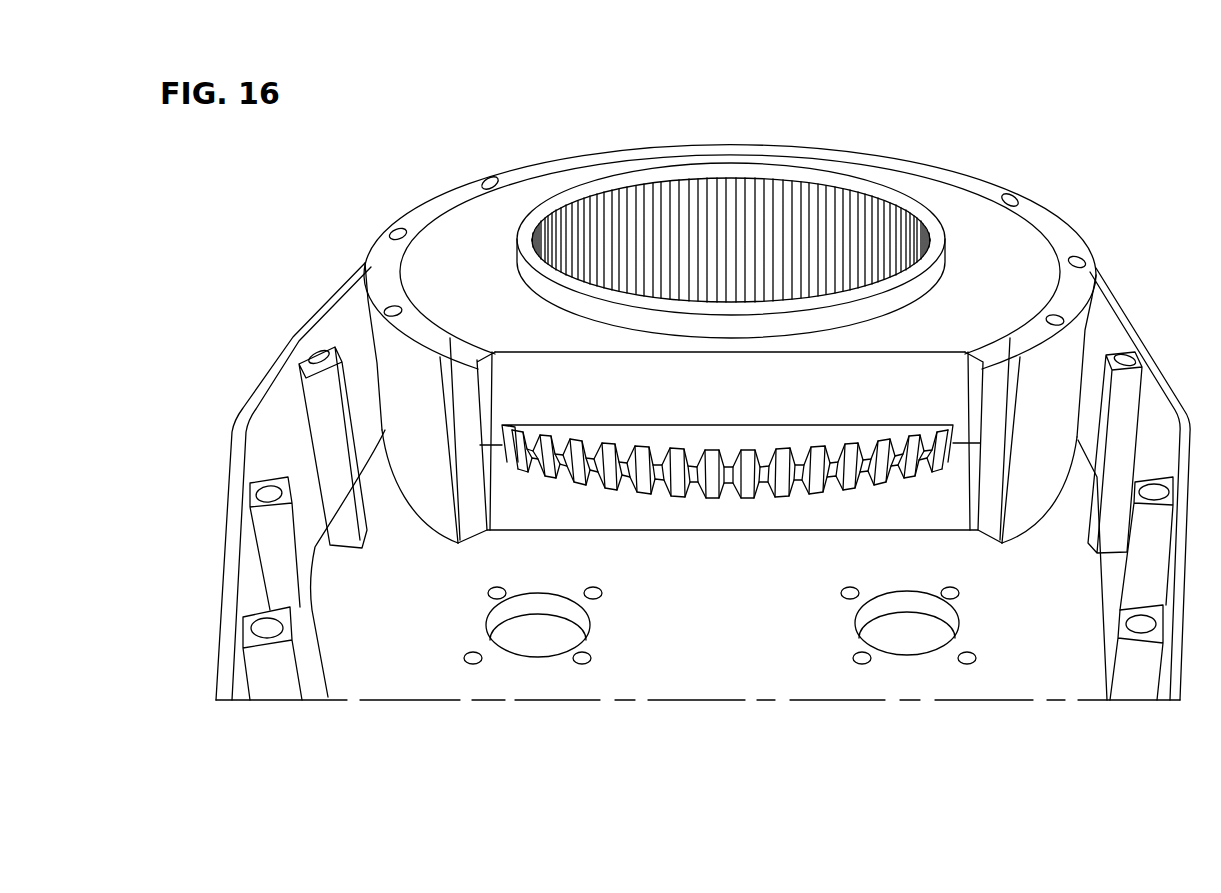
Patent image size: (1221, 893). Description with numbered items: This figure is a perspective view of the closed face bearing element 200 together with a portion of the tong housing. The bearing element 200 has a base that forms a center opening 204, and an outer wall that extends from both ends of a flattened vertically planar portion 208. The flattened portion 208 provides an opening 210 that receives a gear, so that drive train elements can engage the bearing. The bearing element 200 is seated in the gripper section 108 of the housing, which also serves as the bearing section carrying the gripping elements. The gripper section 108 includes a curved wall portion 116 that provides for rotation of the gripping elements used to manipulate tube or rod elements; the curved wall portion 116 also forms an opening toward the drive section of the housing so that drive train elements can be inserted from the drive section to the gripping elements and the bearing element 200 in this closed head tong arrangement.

The gripper section 108 is at (1130, 262).
The curved wall portion 116 is at (1078, 300).
The closed face bearing element 200 is at (487, 240).
The center opening 204 is at (738, 230).
The flattened vertically planar portion 208 is at (870, 388).
The opening 210 is at (684, 449).